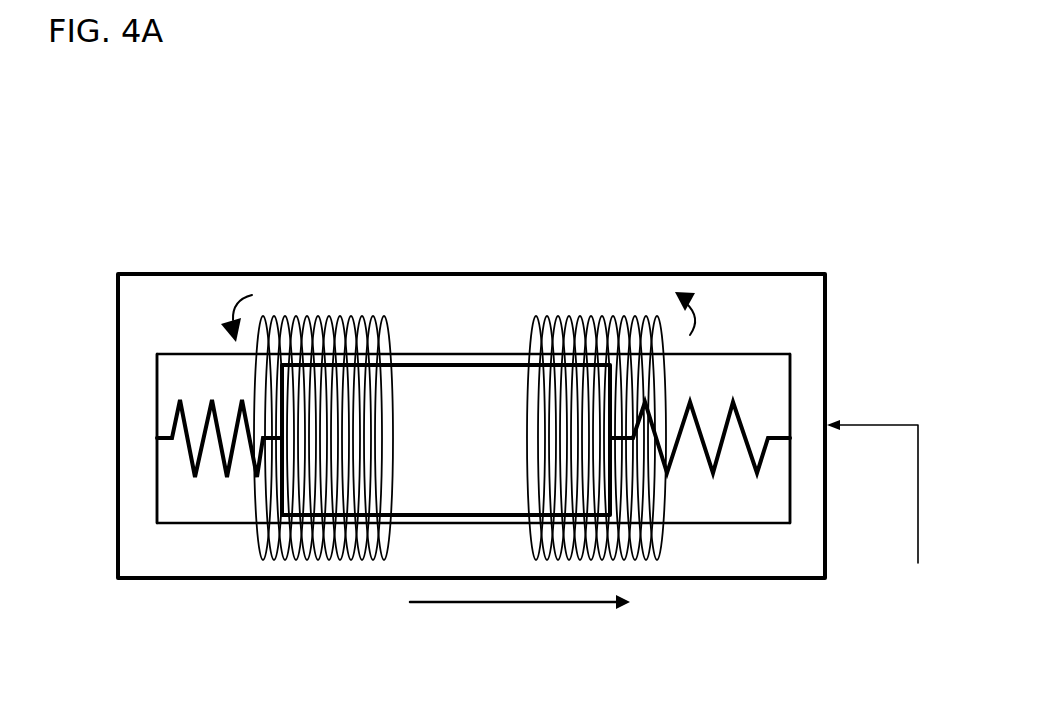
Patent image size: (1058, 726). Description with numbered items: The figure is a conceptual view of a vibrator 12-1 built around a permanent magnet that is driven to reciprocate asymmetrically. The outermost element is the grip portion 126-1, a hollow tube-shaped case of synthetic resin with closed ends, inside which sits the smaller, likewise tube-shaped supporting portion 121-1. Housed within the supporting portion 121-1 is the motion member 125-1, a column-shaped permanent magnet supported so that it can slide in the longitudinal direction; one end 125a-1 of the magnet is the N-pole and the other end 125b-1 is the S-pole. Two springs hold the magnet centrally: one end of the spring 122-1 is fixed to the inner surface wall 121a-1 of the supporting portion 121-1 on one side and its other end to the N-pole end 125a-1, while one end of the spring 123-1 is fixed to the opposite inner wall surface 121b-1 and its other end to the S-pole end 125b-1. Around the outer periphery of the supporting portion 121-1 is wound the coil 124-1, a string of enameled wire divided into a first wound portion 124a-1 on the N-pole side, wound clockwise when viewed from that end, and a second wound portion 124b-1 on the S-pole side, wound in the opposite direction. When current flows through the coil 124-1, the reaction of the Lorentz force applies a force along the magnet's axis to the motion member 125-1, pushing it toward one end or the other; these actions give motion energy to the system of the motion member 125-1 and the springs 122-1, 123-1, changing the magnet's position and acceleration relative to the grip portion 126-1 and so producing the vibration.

The vibrator 12-1 is at (828, 162).
The supporting portion 121-1 is at (773, 352).
The inner surface wall of the supporting portion 121a-1 is at (158, 428).
The inner wall surface of the supporting portion 121b-1 is at (789, 432).
The spring 122-1 is at (190, 465).
The spring 123-1 is at (742, 470).
The coil 124-1 is at (650, 205).
The first wound portion 124a-1 is at (312, 318).
The second wound portion 124b-1 is at (577, 320).
The motion member 125-1 is at (418, 488).
The end of the motion member 125a-1 is at (282, 442).
The end of the motion member 125b-1 is at (613, 447).
The grip portion 126-1 is at (742, 273).